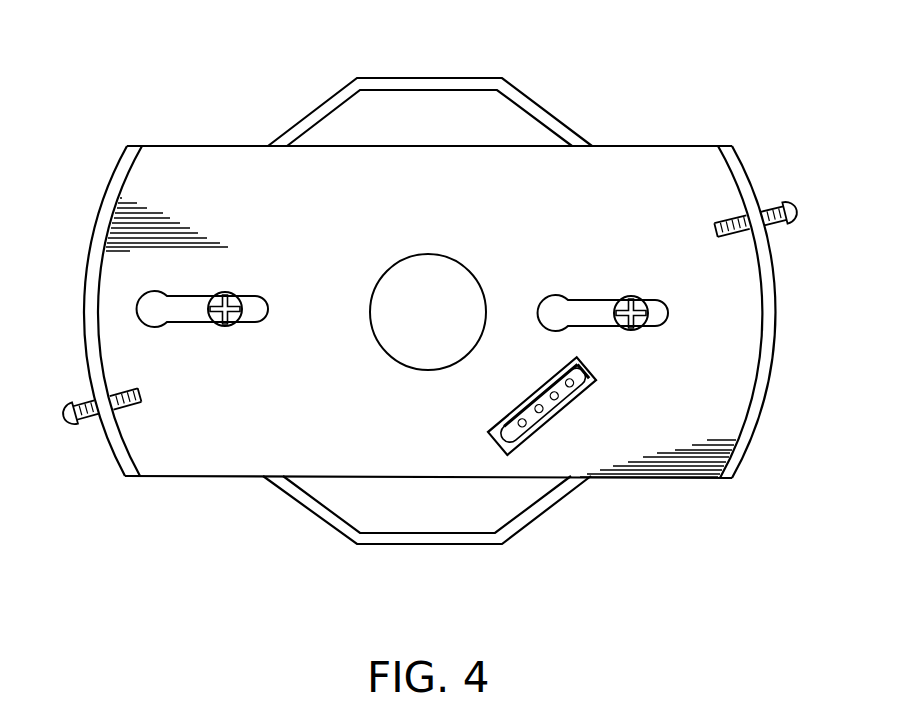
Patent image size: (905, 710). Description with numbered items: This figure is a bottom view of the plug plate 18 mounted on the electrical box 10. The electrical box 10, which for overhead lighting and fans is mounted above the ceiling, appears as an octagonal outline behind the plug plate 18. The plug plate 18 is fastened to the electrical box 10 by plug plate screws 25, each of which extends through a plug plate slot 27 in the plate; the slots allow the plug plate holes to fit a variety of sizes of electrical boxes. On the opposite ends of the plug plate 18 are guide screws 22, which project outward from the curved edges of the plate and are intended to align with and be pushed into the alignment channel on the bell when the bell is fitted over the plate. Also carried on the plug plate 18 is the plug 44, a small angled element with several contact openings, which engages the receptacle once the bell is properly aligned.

The electrical box 10 is at (543, 105).
The plug plate 18 is at (283, 223).
The screws 22 is at (798, 204).
The plug plate screws 25 is at (668, 309).
The plug plate slot 27 is at (557, 308).
The plug 44 is at (585, 395).